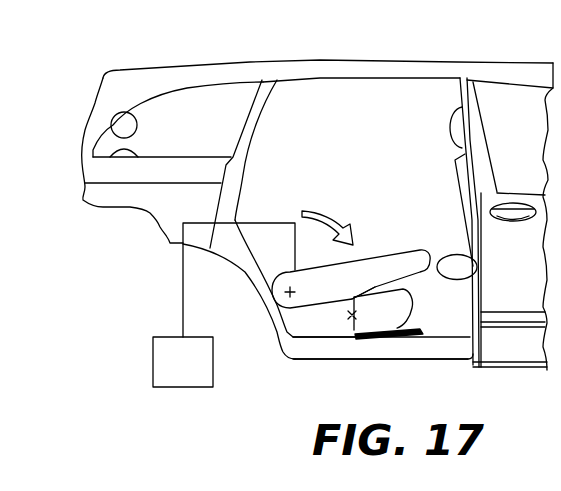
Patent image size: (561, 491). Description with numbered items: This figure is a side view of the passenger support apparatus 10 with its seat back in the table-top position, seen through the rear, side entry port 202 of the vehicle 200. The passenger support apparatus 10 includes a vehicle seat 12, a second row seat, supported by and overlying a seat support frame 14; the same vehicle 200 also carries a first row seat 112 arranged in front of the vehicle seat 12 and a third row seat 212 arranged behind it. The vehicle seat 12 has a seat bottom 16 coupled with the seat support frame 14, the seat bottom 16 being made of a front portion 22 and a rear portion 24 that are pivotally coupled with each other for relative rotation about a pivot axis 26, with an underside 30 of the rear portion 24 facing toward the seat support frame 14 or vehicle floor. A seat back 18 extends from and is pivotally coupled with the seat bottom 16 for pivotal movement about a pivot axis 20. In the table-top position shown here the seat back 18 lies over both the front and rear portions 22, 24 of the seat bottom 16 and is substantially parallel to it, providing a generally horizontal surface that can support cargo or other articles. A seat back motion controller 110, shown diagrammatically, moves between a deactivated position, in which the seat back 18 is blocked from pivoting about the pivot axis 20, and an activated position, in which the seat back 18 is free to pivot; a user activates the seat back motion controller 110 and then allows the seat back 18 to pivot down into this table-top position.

The vehicle 200 is at (148, 82).
The rear, side entry port 202 is at (440, 100).
The third row seat 212 is at (133, 123).
The first row seat 112 is at (460, 124).
The seat back motion controller 110 is at (224, 305).
The underside 30 is at (305, 343).
The seat back 18 is at (366, 258).
The seat bottom 16 is at (362, 295).
The front portion 22 is at (386, 312).
The pivot axis 26 is at (350, 313).
The pivot axis 20 is at (285, 296).
The vehicle seat 12 is at (455, 258).
The seat support frame 14 is at (424, 336).
The rear portion 24 is at (330, 322).
The passenger support apparatus 10 is at (437, 297).